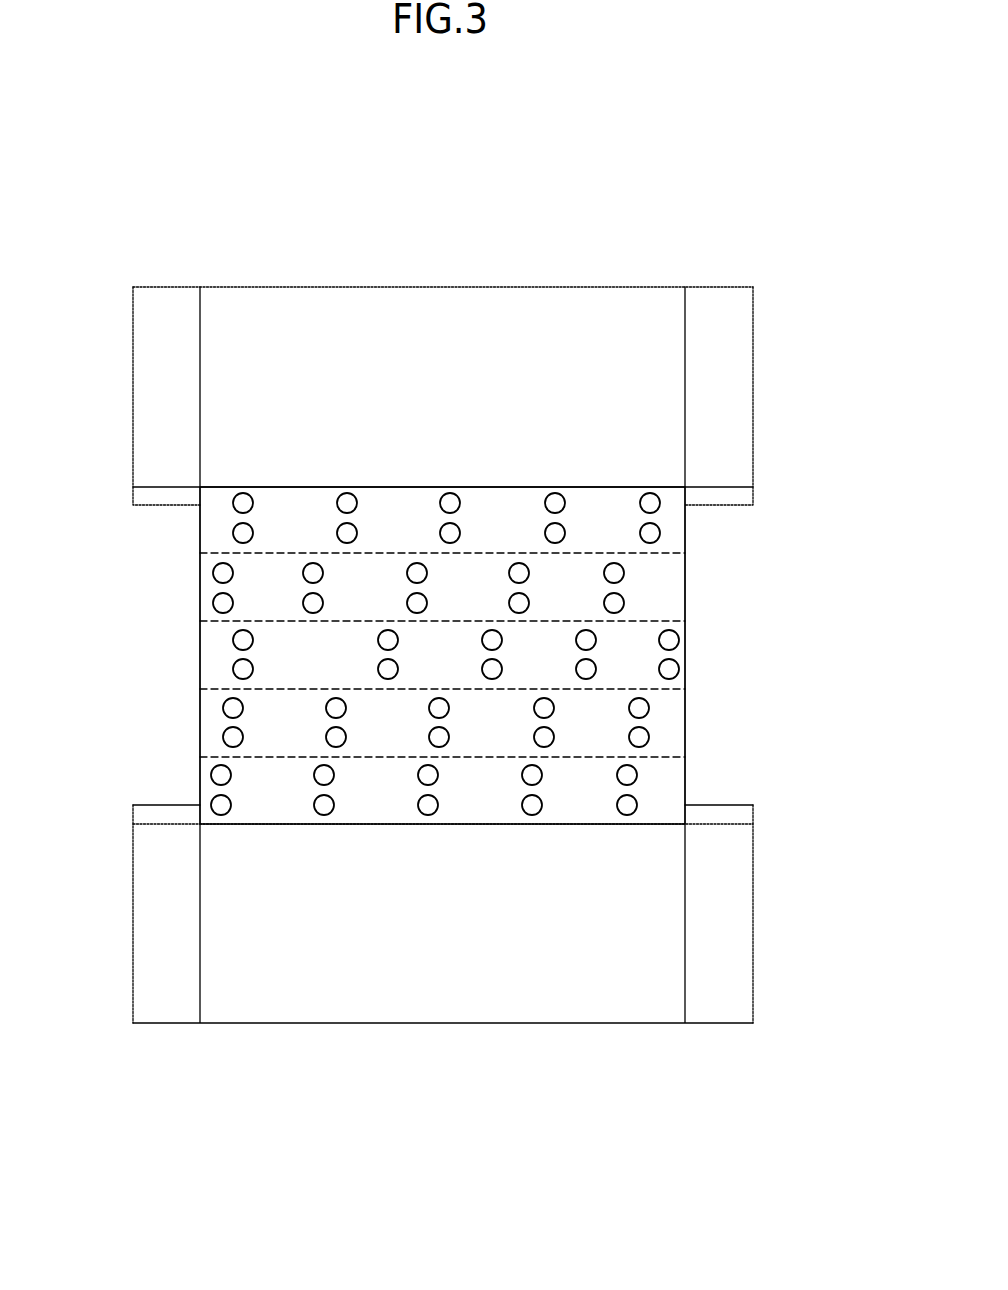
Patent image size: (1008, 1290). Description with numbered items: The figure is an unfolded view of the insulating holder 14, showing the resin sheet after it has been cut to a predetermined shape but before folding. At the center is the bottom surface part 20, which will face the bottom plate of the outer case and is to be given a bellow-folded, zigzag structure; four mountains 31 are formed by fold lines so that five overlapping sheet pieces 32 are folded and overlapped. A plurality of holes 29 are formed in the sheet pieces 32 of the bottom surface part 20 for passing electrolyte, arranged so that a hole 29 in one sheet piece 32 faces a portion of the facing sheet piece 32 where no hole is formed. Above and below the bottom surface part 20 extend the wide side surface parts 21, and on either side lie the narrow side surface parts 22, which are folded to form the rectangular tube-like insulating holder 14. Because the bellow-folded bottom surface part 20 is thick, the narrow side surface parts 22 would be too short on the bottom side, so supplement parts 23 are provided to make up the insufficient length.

The insulating holder 14 is at (806, 313).
The bottom surface part 20 is at (205, 652).
The wide side surface parts 21 is at (432, 300).
The narrow side surface parts 22 is at (145, 398).
The supplement parts 23 is at (145, 497).
The holes 29 is at (518, 573).
The mountains 31 is at (190, 561).
The overlapping sheet pieces 32 is at (675, 778).